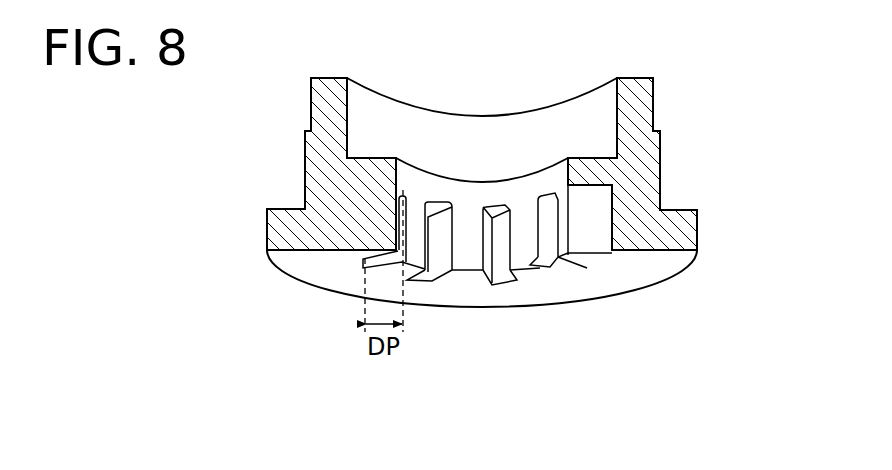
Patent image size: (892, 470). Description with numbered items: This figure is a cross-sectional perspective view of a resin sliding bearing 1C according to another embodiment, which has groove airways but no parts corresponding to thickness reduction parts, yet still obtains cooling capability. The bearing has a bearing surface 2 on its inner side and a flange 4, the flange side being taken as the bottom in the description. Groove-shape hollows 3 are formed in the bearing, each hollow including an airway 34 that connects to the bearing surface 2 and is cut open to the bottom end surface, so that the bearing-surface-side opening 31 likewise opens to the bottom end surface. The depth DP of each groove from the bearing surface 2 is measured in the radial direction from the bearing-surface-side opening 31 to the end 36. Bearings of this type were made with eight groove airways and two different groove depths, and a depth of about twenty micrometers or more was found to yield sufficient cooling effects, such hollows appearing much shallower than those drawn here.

The resin sliding bearing 1C is at (684, 54).
The bearing surface 2 is at (470, 192).
The hollow 3 is at (487, 284).
The flange 4 is at (690, 231).
The bearing-surface-side opening 31 is at (403, 197).
The airway 34 is at (498, 285).
The end 36 is at (363, 262).